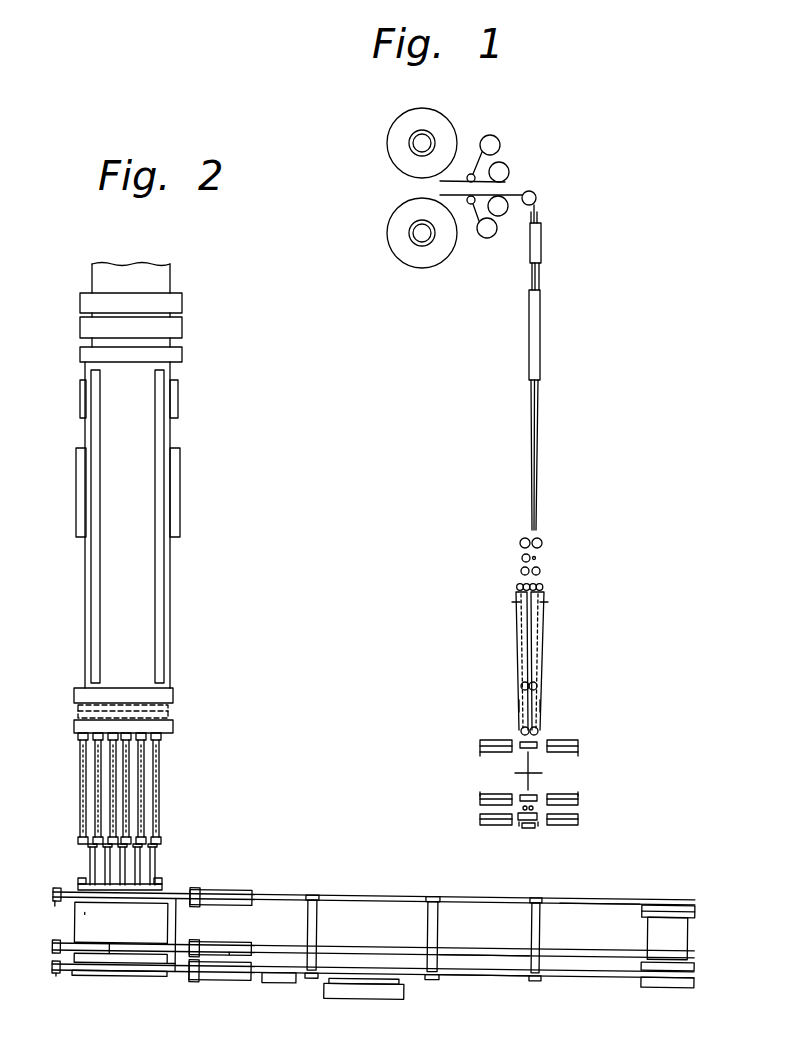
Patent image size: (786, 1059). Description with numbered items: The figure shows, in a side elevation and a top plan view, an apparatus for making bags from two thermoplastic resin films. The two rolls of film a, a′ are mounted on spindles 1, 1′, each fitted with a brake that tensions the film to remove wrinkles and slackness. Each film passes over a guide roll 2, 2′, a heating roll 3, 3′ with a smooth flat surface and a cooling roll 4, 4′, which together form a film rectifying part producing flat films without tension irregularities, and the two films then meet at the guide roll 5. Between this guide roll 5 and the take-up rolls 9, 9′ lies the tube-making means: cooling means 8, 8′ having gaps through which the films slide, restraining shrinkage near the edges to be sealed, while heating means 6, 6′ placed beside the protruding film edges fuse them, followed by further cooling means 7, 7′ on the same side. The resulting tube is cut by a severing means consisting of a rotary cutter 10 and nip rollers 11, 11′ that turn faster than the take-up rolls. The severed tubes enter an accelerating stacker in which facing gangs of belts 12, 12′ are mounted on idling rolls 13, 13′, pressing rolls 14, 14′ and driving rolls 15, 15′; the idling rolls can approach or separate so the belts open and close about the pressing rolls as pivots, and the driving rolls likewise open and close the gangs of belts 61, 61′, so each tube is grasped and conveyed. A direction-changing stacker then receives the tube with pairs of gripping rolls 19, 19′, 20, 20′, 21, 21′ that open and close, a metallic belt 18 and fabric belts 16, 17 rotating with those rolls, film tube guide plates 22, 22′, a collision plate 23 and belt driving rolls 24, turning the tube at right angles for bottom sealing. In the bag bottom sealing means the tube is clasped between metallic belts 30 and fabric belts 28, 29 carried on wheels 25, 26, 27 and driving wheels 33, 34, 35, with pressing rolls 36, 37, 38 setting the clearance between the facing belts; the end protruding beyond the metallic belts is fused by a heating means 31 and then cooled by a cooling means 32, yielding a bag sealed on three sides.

In FIG. 1, the roll of film a is at (388, 136).
In FIG. 2, the roll of film a is at (165, 280).
In FIG. 1, the roll of film a′ is at (388, 237).
In FIG. 2, the roll of film a′ is at (150, 263).
In FIG. 1, the spindle 1 is at (418, 148).
In FIG. 1, the spindle 1′ is at (418, 238).
In FIG. 1, the guide roll 2 is at (468, 173).
In FIG. 1, the guide roll 2′ is at (469, 205).
In FIG. 1, the heating roll 3 is at (493, 141).
In FIG. 2, the heating roll 3 is at (182, 303).
In FIG. 1, the heating roll 3′ is at (487, 239).
In FIG. 1, the cooling roll 4 is at (505, 168).
In FIG. 2, the cooling roll 4 is at (182, 328).
In FIG. 1, the cooling roll 4′ is at (505, 214).
In FIG. 1, the guide roll 5 is at (537, 198).
In FIG. 2, the guide roll 5 is at (182, 354).
In FIG. 2, the heating means 6 is at (178, 400).
In FIG. 1, the heating means 6′ is at (542, 241).
In FIG. 2, the heating means 6′ is at (81, 400).
In FIG. 2, the cooling means 7 is at (180, 495).
In FIG. 1, the cooling means 7′ is at (541, 331).
In FIG. 2, the cooling means 7′ is at (78, 522).
In FIG. 2, the cooling means 8 is at (160, 597).
In FIG. 1, the cooling means 8′ is at (538, 425).
In FIG. 2, the cooling means 8′ is at (92, 622).
In FIG. 1, the take-up roll 9 is at (543, 544).
In FIG. 2, the take-up roll 9 is at (173, 696).
In FIG. 1, the take-up roll 9′ is at (520, 545).
In FIG. 1, the rotary cutter 10 is at (521, 557).
In FIG. 2, the rotary cutter 10 is at (168, 712).
In FIG. 1, the nip roller 11 is at (541, 571).
In FIG. 2, the nip roller 11 is at (173, 728).
In FIG. 1, the nip roller 11′ is at (520, 571).
In FIG. 1, the belt 12 is at (543, 617).
In FIG. 2, the belt 12 is at (150, 806).
In FIG. 1, the belt 12′ is at (519, 616).
In FIG. 1, the idling roll 13 is at (544, 587).
In FIG. 2, the idling roll 13 is at (164, 740).
In FIG. 1, the idling roll 13′ is at (516, 587).
In FIG. 1, the pressing roll 14 is at (537, 685).
In FIG. 2, the pressing roll 14 is at (165, 841).
In FIG. 1, the pressing roll 14′ is at (522, 684).
In FIG. 1, the driving roll 15 is at (538, 731).
In FIG. 1, the driving roll 15′ is at (521, 731).
In FIG. 1, the fabric belt 16 is at (580, 742).
In FIG. 2, the fabric belt 16 is at (165, 905).
In FIG. 1, the fabric belt 17 is at (579, 800).
In FIG. 2, the fabric belt 17 is at (178, 946).
In FIG. 1, the metallic belt 18 is at (572, 826).
In FIG. 2, the metallic belt 18 is at (181, 970).
In FIG. 1, the gripping roll 19 is at (576, 754).
In FIG. 2, the gripping roll 19 is at (56, 897).
In FIG. 1, the gripping roll 19′ is at (482, 754).
In FIG. 1, the gripping roll 20 is at (580, 795).
In FIG. 2, the gripping roll 20 is at (95, 913).
In FIG. 1, the gripping roll 20′ is at (481, 797).
In FIG. 1, the gripping roll 21 is at (539, 823).
In FIG. 2, the gripping roll 21 is at (58, 972).
In FIG. 1, the gripping roll 21′ is at (518, 823).
In FIG. 1, the film tube guide plate 22 is at (552, 773).
In FIG. 2, the film tube guide plate 22 is at (113, 932).
In FIG. 1, the film tube guide plate 22′ is at (580, 822).
In FIG. 2, the film tube guide plate 22′ is at (133, 962).
In FIG. 1, the collision plate 23 is at (528, 830).
In FIG. 2, the collision plate 23 is at (150, 976).
In FIG. 2, the belt driving roll 24 is at (200, 970).
In FIG. 2, the wheel 25 is at (246, 889).
In FIG. 2, the wheel 26 is at (228, 950).
In FIG. 2, the wheel 27 is at (276, 981).
In FIG. 2, the fabric belt 28 is at (572, 905).
In FIG. 2, the fabric belt 29 is at (452, 955).
In FIG. 2, the metallic belt 30 is at (490, 975).
In FIG. 2, the heating means 31 is at (328, 984).
In FIG. 2, the cooling means 32 is at (362, 985).
In FIG. 2, the driving wheel 33 is at (668, 898).
In FIG. 2, the driving wheel 34 is at (668, 948).
In FIG. 2, the driving wheel 35 is at (658, 981).
In FIG. 2, the pressing roll 36 is at (318, 934).
In FIG. 2, the pressing roll 37 is at (428, 929).
In FIG. 2, the pressing roll 38 is at (540, 930).
In FIG. 1, the belt 61 is at (540, 706).
In FIG. 2, the belt 61 is at (160, 870).
In FIG. 1, the belt 61′ is at (519, 706).